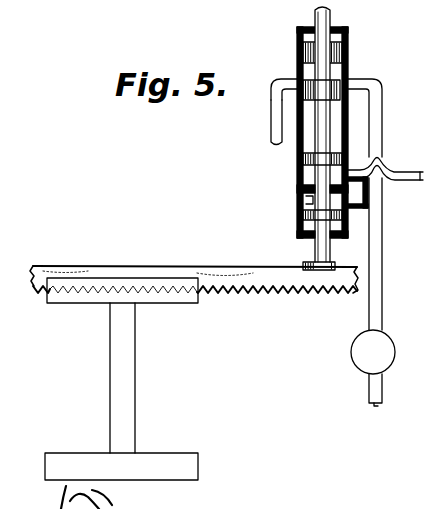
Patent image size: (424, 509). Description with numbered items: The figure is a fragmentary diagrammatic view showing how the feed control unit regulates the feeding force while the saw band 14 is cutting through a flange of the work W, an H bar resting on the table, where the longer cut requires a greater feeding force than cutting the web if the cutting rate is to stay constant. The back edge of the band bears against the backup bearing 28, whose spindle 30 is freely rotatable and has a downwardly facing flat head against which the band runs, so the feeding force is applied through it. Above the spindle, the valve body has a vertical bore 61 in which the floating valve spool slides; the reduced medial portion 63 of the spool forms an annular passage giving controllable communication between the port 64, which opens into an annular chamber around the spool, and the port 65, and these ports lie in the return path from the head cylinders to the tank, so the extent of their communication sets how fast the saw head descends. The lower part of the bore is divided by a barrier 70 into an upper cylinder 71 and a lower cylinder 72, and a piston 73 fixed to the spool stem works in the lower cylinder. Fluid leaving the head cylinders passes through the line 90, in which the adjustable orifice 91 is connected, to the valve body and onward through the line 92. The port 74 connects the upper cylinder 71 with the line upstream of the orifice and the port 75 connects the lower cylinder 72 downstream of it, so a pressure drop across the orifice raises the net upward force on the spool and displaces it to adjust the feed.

The saw band 14 is at (234, 293).
The backup bearing 28 is at (301, 265).
The spindle 30 is at (306, 200).
The vertical bore 61 is at (350, 43).
The reduced medial portion 63 is at (329, 72).
The port 64 is at (346, 86).
The port 65 is at (296, 81).
The barrier 70 is at (297, 188).
The upper cylinder 71 is at (300, 168).
The lower cylinder 72 is at (301, 212).
The piston 73 is at (300, 226).
The port 74 is at (349, 171).
The port 75 is at (344, 209).
The line 90 is at (383, 245).
The adjustable orifice 91 is at (351, 352).
The line 92 is at (271, 118).
The work W is at (130, 388).